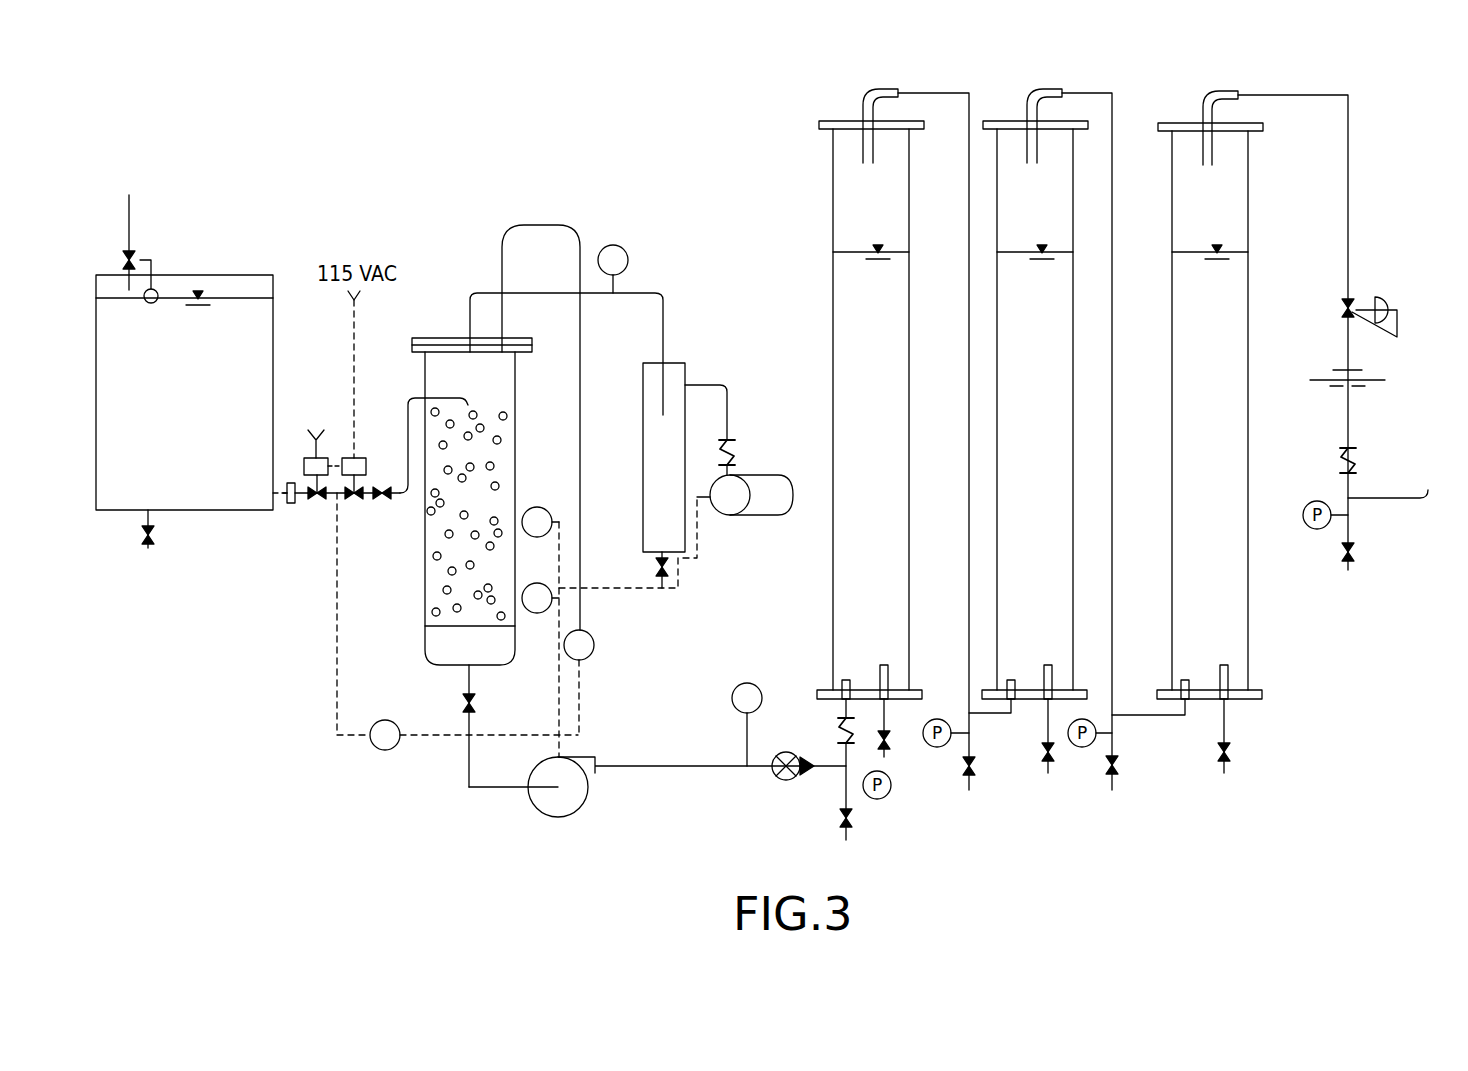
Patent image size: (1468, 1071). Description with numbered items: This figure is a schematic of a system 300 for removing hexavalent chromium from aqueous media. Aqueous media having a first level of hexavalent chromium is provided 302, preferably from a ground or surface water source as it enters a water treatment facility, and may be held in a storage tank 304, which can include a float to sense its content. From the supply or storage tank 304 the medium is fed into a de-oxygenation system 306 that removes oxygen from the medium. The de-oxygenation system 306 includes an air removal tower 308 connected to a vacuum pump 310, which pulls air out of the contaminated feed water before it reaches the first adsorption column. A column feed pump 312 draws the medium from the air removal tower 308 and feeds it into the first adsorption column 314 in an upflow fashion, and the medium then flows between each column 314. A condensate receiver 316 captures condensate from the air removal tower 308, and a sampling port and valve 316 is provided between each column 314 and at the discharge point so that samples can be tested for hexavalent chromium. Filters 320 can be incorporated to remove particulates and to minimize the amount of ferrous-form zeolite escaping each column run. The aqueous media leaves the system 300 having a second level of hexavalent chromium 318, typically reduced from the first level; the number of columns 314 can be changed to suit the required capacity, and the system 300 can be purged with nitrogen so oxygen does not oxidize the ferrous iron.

The system 300 is at (579, 128).
The aqueous media supply 302 is at (129, 213).
The storage tank 304 is at (237, 312).
The de-oxygenation system 306 is at (465, 266).
The air removal tower 308 is at (452, 357).
The vacuum pump 310 is at (325, 462).
The column feed pump 312 is at (573, 792).
The adsorption column 314 is at (848, 193).
The sampling port and valve 316 is at (650, 392).
The discharged aqueous media 318 is at (1428, 490).
The filter 320 is at (290, 480).